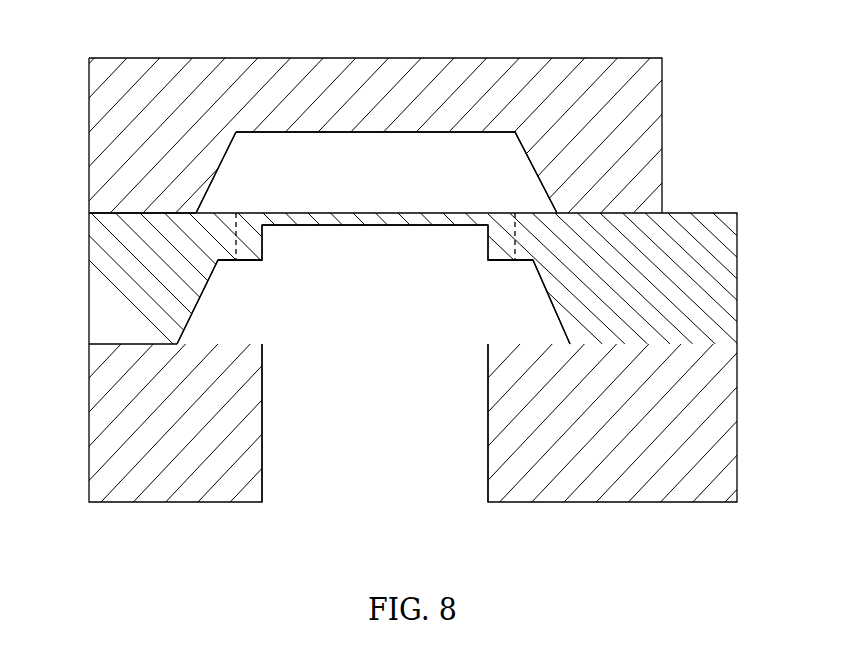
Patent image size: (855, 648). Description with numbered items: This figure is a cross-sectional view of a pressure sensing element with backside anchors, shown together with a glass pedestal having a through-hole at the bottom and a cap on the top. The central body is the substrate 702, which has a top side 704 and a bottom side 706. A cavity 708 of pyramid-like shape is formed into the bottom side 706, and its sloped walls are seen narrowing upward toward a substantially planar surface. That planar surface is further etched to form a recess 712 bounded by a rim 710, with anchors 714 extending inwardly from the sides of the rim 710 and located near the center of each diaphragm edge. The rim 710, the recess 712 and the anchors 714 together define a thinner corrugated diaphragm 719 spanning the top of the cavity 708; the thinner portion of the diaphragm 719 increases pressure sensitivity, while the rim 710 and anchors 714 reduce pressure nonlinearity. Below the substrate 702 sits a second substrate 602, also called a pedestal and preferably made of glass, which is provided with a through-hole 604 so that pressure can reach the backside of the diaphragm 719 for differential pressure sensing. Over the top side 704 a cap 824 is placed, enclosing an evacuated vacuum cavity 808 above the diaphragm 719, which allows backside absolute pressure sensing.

The second substrate 602 is at (737, 433).
The through-hole 604 is at (330, 435).
The substrate 702 is at (737, 277).
The top side 704 is at (110, 212).
The bottom side 706 is at (110, 340).
The cavity 708 is at (380, 322).
The rim 710 is at (215, 258).
The recess 712 is at (290, 252).
The anchors 714 is at (247, 262).
The corrugated diaphragm 719 is at (403, 213).
The vacuum cavity 808 is at (395, 143).
The cap 824 is at (169, 63).